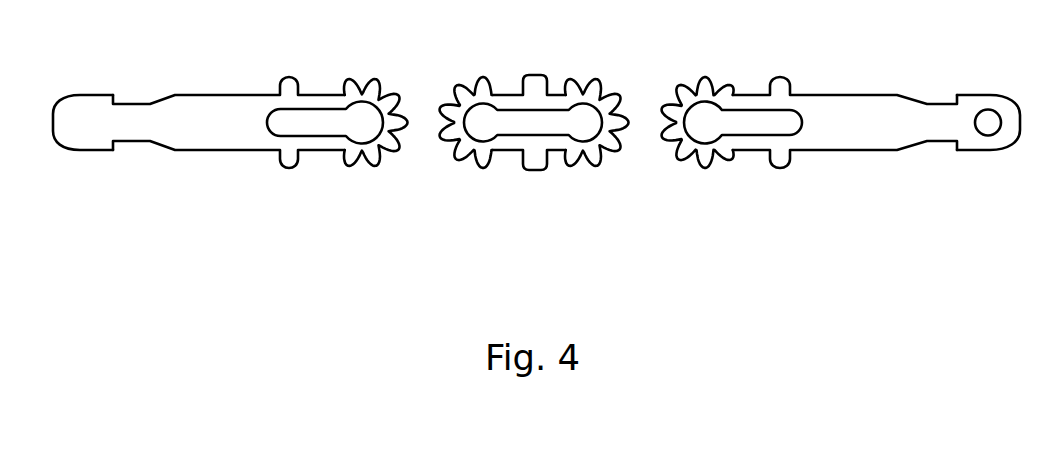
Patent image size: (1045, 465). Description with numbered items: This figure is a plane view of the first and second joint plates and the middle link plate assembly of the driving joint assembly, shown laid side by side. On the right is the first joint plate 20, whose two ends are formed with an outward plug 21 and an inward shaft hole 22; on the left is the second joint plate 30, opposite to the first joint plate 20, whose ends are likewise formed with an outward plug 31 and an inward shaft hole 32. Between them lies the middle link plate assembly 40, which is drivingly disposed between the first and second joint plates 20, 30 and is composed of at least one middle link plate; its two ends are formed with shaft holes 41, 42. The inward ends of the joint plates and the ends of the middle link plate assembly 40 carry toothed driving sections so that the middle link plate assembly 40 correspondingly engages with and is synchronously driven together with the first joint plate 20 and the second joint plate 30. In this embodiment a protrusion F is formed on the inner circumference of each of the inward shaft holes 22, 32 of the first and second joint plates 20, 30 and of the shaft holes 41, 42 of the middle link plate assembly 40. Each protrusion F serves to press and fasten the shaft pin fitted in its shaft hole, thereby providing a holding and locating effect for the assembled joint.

The first joint plate 20 is at (852, 138).
The outward plug 21 is at (977, 140).
The inward shaft hole 22 is at (710, 133).
The second joint plate 30 is at (212, 137).
The outward plug 31 is at (72, 123).
The inward shaft hole 32 is at (358, 127).
The middle link plate assembly 40 is at (527, 143).
The shaft hole 41 is at (487, 128).
The shaft hole 42 is at (582, 135).
The protrusion F is at (378, 124).